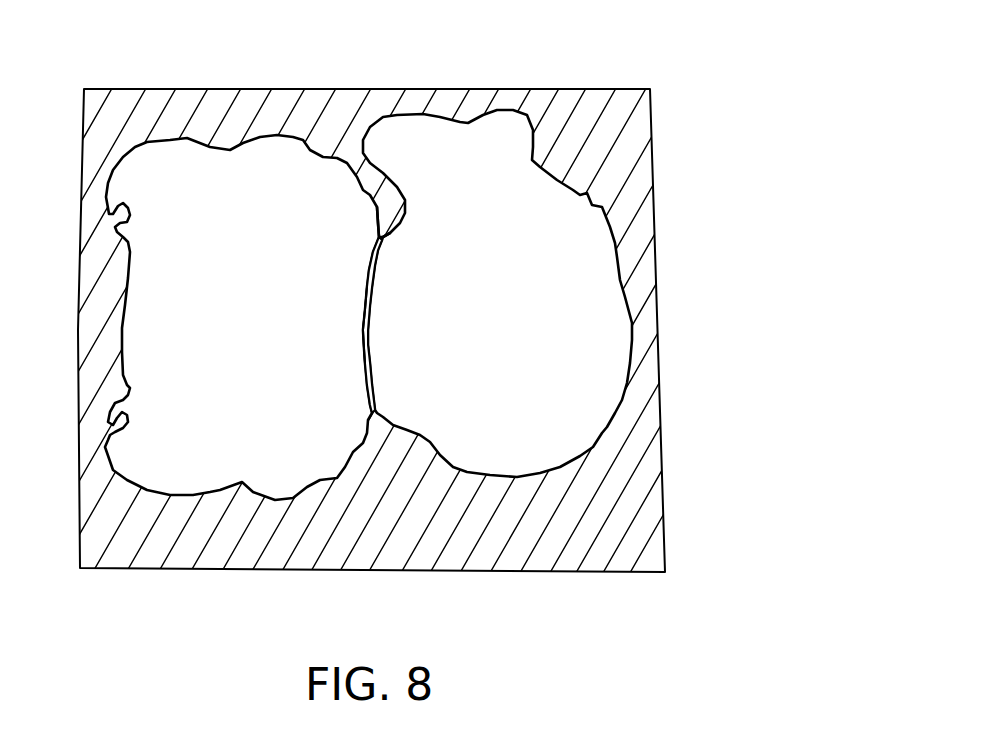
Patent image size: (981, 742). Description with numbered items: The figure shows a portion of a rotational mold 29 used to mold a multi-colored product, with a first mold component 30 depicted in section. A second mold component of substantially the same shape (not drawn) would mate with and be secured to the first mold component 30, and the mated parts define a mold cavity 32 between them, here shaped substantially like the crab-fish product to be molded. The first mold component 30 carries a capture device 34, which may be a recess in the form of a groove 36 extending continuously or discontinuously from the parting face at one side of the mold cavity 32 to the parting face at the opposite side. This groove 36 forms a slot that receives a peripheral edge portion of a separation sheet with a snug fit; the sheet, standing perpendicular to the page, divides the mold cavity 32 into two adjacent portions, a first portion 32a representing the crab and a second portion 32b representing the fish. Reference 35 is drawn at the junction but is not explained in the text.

The mold 29 is at (175, 575).
The first mold component 30 is at (667, 190).
The mold cavity 32 is at (368, 367).
The first portion 32a is at (288, 460).
The second portion 32b is at (503, 432).
The capture device 34 is at (372, 413).
The junction of cavities 35 is at (380, 235).
The groove 36 is at (362, 333).